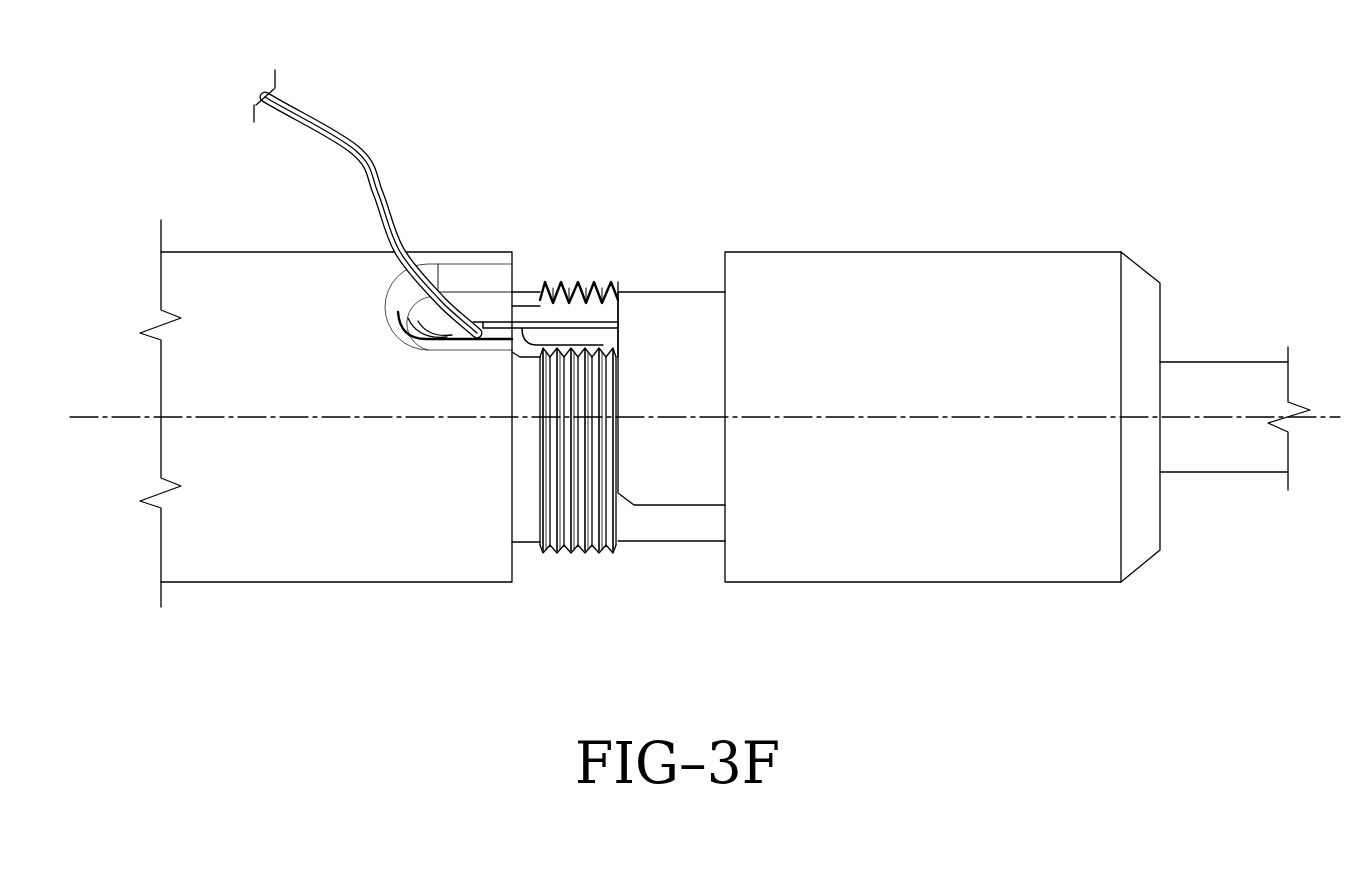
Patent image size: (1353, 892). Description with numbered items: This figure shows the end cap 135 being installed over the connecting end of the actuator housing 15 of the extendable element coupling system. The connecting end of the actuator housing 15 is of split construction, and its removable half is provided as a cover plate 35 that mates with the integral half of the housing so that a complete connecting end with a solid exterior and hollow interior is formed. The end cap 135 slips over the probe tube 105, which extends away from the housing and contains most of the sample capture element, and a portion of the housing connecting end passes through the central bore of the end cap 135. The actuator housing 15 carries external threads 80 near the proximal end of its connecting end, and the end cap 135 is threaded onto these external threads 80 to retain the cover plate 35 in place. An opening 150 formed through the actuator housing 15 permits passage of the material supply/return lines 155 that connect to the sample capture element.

The actuator housing 15 is at (357, 542).
The cover plate 35 is at (665, 318).
The external threads 80 is at (571, 283).
The probe tube 105 is at (1205, 453).
The end cap 135 is at (866, 292).
The opening 150 is at (485, 303).
The supply/return lines 155 is at (352, 147).